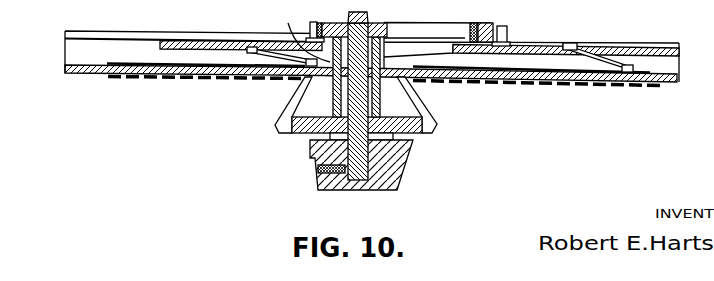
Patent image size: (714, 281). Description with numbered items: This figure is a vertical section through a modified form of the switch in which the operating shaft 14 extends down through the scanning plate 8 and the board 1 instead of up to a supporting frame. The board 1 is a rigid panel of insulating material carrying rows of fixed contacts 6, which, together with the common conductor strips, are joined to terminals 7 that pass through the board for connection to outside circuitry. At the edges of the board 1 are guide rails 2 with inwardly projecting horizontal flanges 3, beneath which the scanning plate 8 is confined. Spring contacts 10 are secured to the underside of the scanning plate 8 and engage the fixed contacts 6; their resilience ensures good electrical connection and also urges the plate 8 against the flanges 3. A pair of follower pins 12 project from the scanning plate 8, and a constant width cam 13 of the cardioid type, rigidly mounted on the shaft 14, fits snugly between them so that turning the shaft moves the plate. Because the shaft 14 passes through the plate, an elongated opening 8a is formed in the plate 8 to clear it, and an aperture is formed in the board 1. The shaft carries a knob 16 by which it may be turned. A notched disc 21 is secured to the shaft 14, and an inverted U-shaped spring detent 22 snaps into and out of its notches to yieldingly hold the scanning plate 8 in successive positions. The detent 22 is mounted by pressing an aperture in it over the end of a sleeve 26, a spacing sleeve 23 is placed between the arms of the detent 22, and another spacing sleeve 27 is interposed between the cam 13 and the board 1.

The board 1 is at (85, 75).
The guide rails 2 is at (78, 50).
The horizontal flanges 3 is at (118, 35).
The fixed contacts 6 is at (152, 63).
The terminals 7 is at (203, 80).
The scanning plate 8 is at (197, 43).
The elongated opening 8a is at (396, 56).
The spring contacts 10 is at (278, 68).
The follower pins 12 is at (322, 23).
The constant width cam 13 is at (460, 24).
The shaft 14 is at (362, 113).
The knob 16 is at (409, 170).
The notched disc 21 is at (300, 136).
The spring detent 22 is at (275, 124).
The spacing sleeve 23 is at (333, 101).
The sleeve 26 is at (296, 37).
The spacing sleeve 27 is at (418, 57).